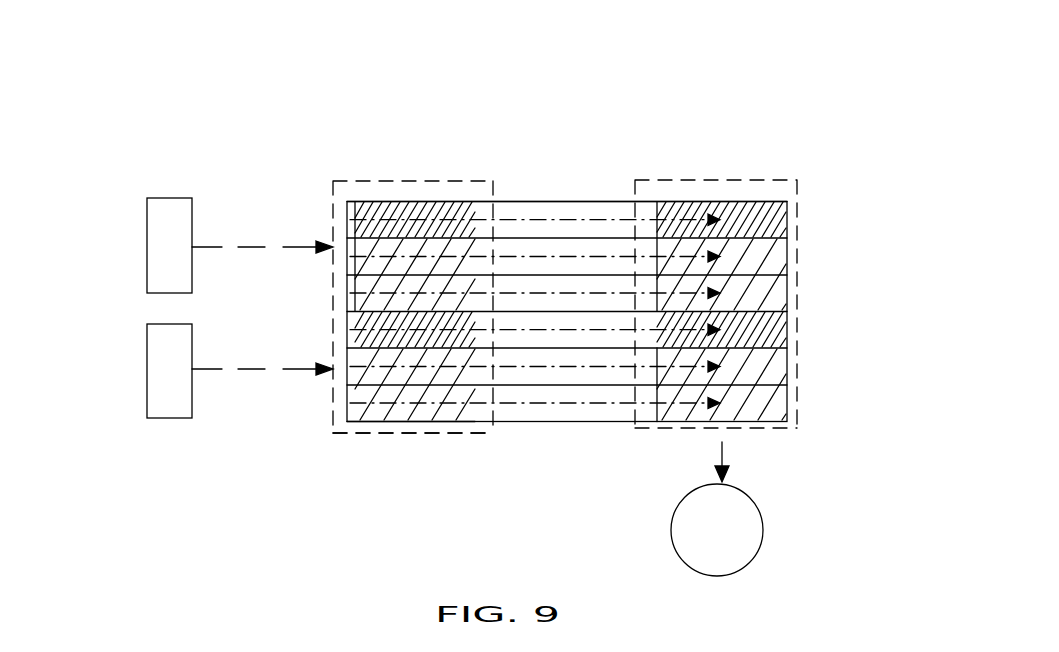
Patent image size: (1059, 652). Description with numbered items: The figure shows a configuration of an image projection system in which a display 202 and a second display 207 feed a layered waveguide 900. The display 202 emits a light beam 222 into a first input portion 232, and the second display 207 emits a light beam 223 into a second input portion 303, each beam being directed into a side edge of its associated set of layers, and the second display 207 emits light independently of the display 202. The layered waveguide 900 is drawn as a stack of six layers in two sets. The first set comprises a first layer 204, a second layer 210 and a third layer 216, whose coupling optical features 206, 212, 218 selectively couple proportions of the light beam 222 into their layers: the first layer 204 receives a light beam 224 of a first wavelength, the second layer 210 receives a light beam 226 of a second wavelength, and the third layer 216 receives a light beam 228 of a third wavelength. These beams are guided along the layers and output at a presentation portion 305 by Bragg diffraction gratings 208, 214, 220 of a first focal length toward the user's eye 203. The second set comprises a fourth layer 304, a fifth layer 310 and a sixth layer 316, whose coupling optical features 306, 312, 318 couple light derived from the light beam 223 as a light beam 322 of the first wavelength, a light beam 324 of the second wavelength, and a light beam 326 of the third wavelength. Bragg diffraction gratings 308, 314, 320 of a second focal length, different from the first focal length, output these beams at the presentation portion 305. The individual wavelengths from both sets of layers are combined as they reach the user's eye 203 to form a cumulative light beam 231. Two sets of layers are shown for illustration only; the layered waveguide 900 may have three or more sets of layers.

The layered waveguide 900 is at (782, 80).
The second display 207 is at (160, 198).
The display 202 is at (180, 418).
The light beam 223 is at (243, 245).
The light beam 222 is at (250, 369).
The second input portion 303 is at (333, 181).
The presentation portion 305 is at (797, 180).
The sixth layer 316 is at (795, 215).
The fifth layer 310 is at (795, 253).
The fourth layer 304 is at (795, 290).
The third layer 216 is at (795, 327).
The second layer 210 is at (795, 365).
The first layer 204 is at (795, 402).
The light beam 326 is at (645, 210).
The light beam 324 is at (560, 255).
The light beam 322 is at (520, 292).
The light beam 228 is at (600, 330).
The light beam 226 is at (525, 367).
The light beam 224 is at (497, 403).
The coupling optical features 318 is at (362, 215).
The coupling optical features 312 is at (383, 215).
The coupling optical features 306 is at (420, 275).
The coupling optical features 218 is at (365, 325).
The coupling optical features 212 is at (365, 348).
The coupling optical features 206 is at (380, 432).
The first input portion 232 is at (462, 433).
The Bragg diffraction gratings 308 is at (760, 215).
The Bragg diffraction gratings 320 is at (722, 210).
The Bragg diffraction gratings 314 is at (740, 240).
The Bragg diffraction gratings 214 is at (735, 400).
The Bragg diffraction gratings 220 is at (750, 380).
The Bragg diffraction gratings 208 is at (730, 410).
The cumulative light beam 231 is at (716, 457).
The user's eye 203 is at (763, 542).